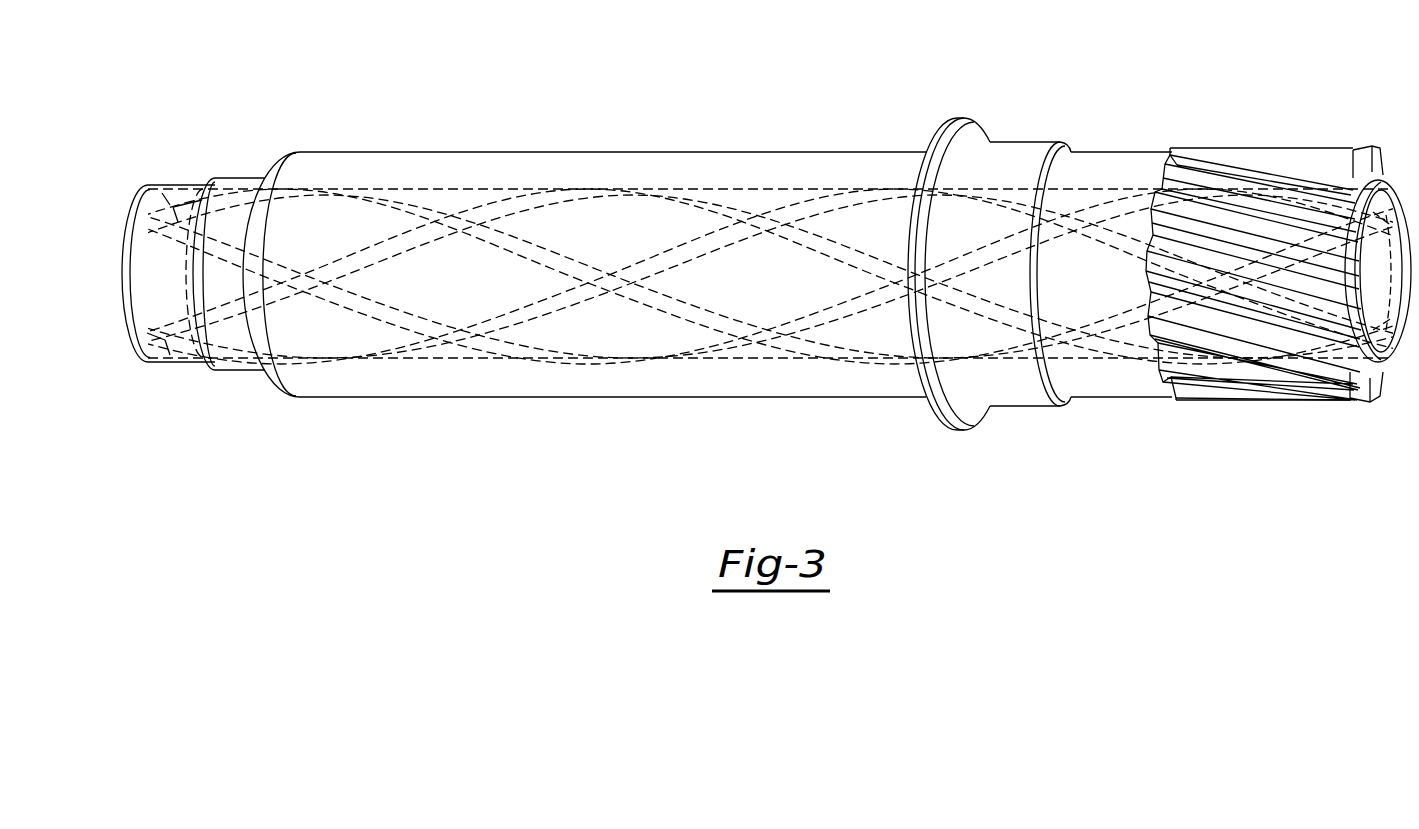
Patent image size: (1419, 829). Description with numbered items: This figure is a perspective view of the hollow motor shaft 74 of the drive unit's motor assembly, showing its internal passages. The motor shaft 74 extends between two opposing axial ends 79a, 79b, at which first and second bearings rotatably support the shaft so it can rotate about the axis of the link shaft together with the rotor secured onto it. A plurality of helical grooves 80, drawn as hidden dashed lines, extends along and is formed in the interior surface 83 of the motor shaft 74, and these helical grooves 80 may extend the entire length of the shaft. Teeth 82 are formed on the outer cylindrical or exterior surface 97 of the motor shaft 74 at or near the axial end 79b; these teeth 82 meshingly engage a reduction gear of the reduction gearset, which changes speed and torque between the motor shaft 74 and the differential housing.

The motor shaft 74 is at (587, 108).
The axial end 79a is at (182, 187).
The axial end 79b is at (1371, 180).
The helical grooves 80 is at (425, 210).
The teeth 82 is at (1267, 178).
The interior surface 83 is at (1373, 310).
The exterior surface 97 is at (755, 207).